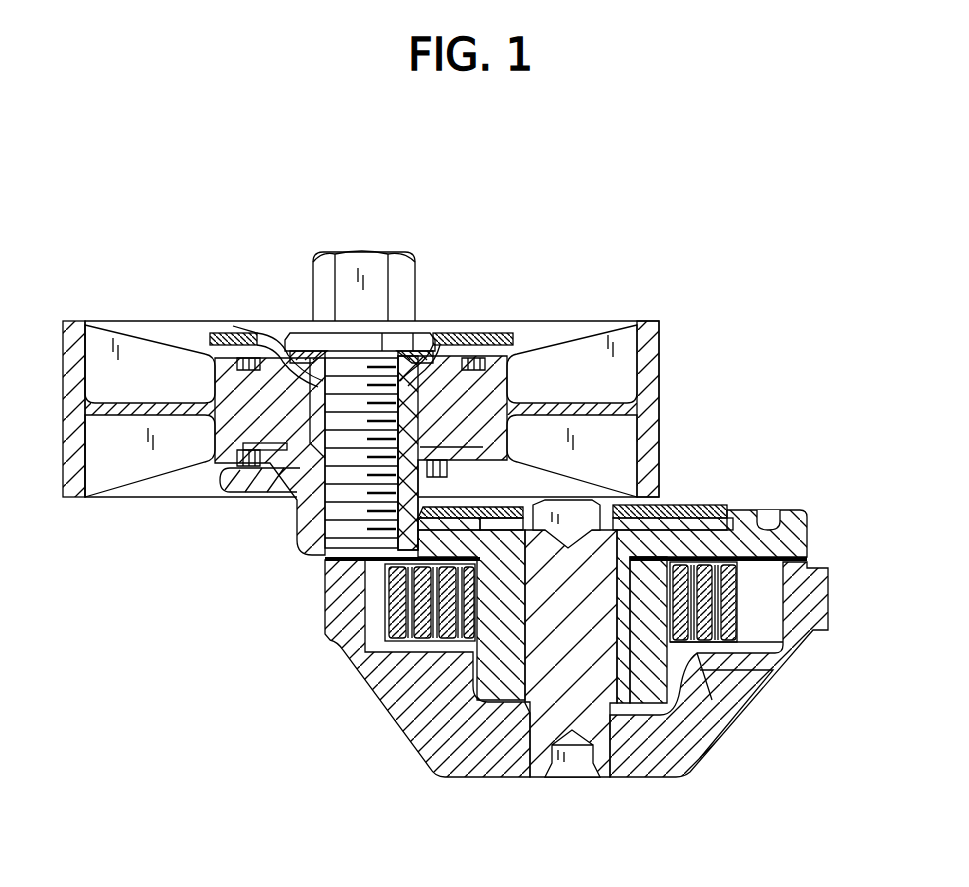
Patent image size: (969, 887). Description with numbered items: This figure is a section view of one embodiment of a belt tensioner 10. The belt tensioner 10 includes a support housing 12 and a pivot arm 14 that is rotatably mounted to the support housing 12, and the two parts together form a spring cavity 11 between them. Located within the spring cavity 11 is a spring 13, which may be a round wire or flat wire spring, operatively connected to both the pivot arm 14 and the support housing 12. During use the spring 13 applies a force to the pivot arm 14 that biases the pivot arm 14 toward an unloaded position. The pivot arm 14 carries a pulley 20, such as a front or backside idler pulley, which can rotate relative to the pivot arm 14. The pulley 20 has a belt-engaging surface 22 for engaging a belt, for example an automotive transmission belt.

The belt tensioner 10 is at (707, 217).
The spring cavity 11 is at (765, 592).
The support housing 12 is at (720, 733).
The spring 13 is at (390, 605).
The pivot arm 14 is at (747, 512).
The pulley 20 is at (651, 372).
The belt-engaging surface 22 is at (63, 450).